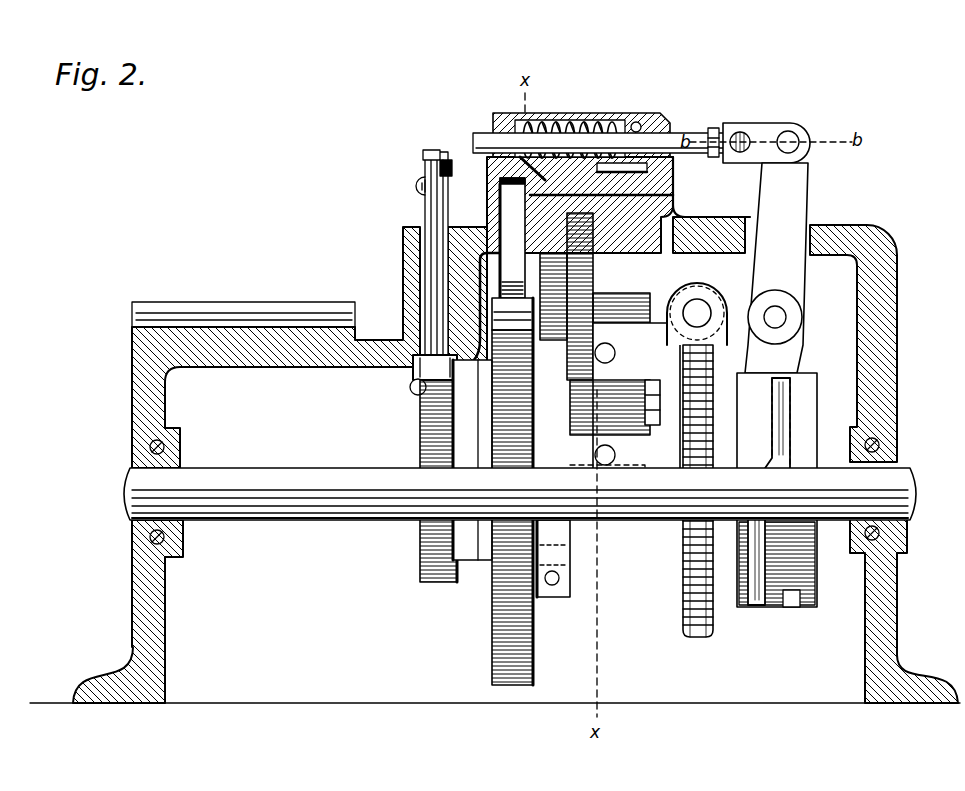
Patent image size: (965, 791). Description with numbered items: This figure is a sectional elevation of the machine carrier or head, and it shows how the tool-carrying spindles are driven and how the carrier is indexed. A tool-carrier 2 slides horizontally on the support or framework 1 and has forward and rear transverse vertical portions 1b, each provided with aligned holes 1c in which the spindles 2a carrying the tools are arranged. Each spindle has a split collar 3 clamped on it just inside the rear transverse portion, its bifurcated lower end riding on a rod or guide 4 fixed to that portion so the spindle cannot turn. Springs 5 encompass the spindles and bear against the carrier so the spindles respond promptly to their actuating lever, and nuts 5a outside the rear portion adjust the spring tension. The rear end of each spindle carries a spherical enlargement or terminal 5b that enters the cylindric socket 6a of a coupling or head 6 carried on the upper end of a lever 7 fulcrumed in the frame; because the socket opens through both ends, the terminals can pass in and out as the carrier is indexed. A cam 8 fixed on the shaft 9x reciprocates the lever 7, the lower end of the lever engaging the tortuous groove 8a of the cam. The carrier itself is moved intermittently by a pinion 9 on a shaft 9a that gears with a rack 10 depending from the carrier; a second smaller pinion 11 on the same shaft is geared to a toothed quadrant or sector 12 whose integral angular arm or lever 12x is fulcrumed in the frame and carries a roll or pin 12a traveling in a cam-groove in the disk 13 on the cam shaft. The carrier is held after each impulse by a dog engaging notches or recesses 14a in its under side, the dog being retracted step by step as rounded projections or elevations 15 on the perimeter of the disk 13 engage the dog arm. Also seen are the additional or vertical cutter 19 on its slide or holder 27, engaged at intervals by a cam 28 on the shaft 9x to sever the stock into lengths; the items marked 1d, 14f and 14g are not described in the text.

The support or framework 1 is at (515, 460).
The transverse vertical portion 1b is at (497, 118).
The holes 1c is at (698, 100).
The housing boss 1d is at (498, 200).
The tool-carrier 2 is at (662, 183).
The spindles 2a is at (472, 143).
The split collar 3 is at (600, 113).
The rod or guide 4 is at (698, 200).
The springs 5 is at (543, 125).
The nuts 5a is at (714, 128).
The spherical enlargements or terminals 5b is at (789, 130).
The coupling or head 6 is at (746, 134).
The cylindric socket 6a is at (795, 168).
The lever 7 is at (788, 268).
The cam 8 is at (806, 388).
The tortuous groove 8a is at (796, 436).
The pinion 9 is at (590, 293).
The shaft 9a is at (648, 300).
The shaft 9x is at (374, 507).
The rack 10 is at (688, 215).
The second smaller pinion 11 is at (498, 262).
The toothed quadrant or sector 12 is at (668, 210).
The roll or pin 12a is at (533, 558).
The angular arm or lever 12x is at (557, 532).
The disk 13 is at (493, 566).
The notches or recesses 14a is at (540, 165).
The pivot 14f is at (697, 300).
The rack gear 14g is at (683, 601).
The rounded projections or elevations 15 is at (510, 482).
The additional or vertical cutter 19 is at (422, 156).
The slide or holder 27 is at (424, 216).
The cam 28 is at (420, 444).